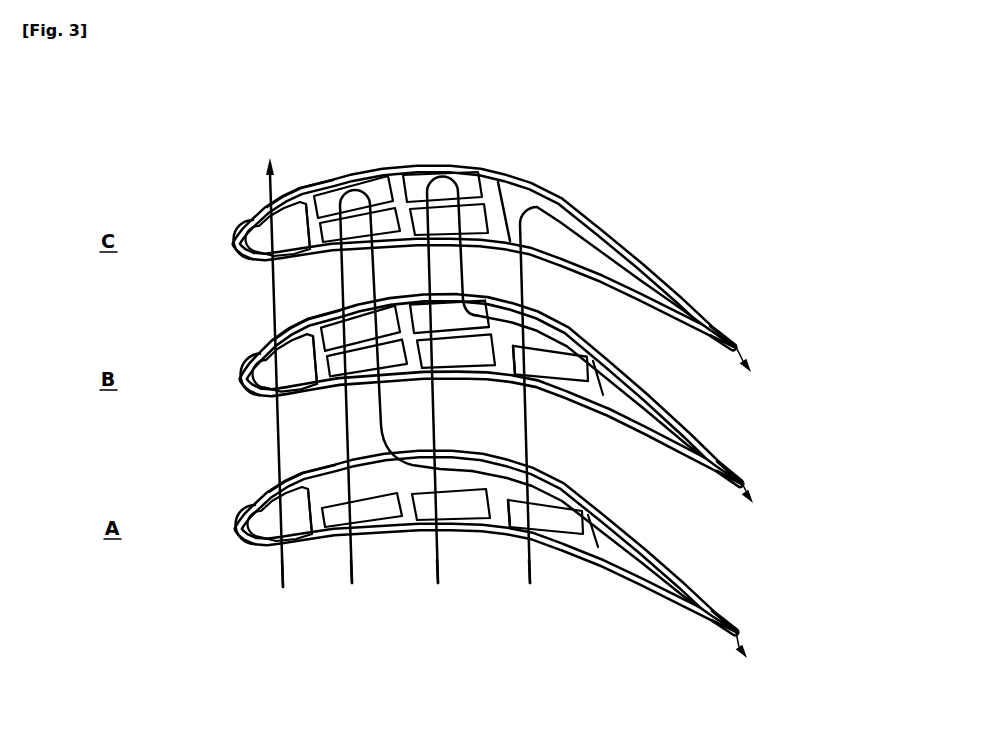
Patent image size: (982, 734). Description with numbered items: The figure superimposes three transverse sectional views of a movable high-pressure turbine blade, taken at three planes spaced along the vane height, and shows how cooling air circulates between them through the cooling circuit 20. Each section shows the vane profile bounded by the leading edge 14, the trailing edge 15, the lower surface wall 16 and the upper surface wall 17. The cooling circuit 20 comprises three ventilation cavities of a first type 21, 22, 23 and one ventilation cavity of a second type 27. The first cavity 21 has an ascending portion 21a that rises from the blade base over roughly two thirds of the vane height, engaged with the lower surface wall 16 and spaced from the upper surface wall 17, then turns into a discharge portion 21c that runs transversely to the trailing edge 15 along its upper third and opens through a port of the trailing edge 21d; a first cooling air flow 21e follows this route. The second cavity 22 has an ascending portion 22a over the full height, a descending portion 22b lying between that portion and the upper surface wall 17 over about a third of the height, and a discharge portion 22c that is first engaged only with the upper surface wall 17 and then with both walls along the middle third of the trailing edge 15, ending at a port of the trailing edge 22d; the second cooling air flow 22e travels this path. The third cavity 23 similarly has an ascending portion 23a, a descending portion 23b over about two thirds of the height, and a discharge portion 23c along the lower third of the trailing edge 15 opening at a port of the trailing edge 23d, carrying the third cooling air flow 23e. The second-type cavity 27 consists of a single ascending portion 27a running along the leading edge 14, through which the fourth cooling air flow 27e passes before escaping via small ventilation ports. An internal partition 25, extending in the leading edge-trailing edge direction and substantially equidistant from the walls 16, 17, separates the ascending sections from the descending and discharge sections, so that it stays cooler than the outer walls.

The leading edge 14 is at (237, 248).
The trailing edge 15 is at (736, 346).
The lower surface wall 16 is at (282, 262).
The upper surface wall 17 is at (287, 195).
The cooling circuit 20 is at (608, 189).
The first ventilation cavity of the first type 21 is at (518, 562).
The ascending portion 21a is at (557, 380).
The discharge portion 21c is at (540, 238).
The port of the trailing edge 21d is at (708, 336).
The first cooling air flow 21e is at (531, 585).
The second ventilation cavity of the first type 22 is at (428, 554).
The ascending portion 22a is at (467, 228).
The descending portion 22b is at (418, 182).
The discharge portion 22c is at (630, 412).
The port of the trailing edge 22d is at (716, 470).
The second cooling air flow 22e is at (439, 585).
The third ventilation cavity of the first type 23 is at (342, 560).
The ascending portion 23a is at (383, 227).
The descending portion 23b is at (343, 190).
The discharge portion 23c is at (627, 560).
The port of the trailing edge 23d is at (711, 622).
The third cooling air flow 23e is at (353, 585).
The internal partition 25 is at (470, 194).
The ventilation cavity of the second type 27 is at (249, 571).
The ascending portion 27a is at (252, 240).
The fourth cooling air flow 27e is at (282, 590).